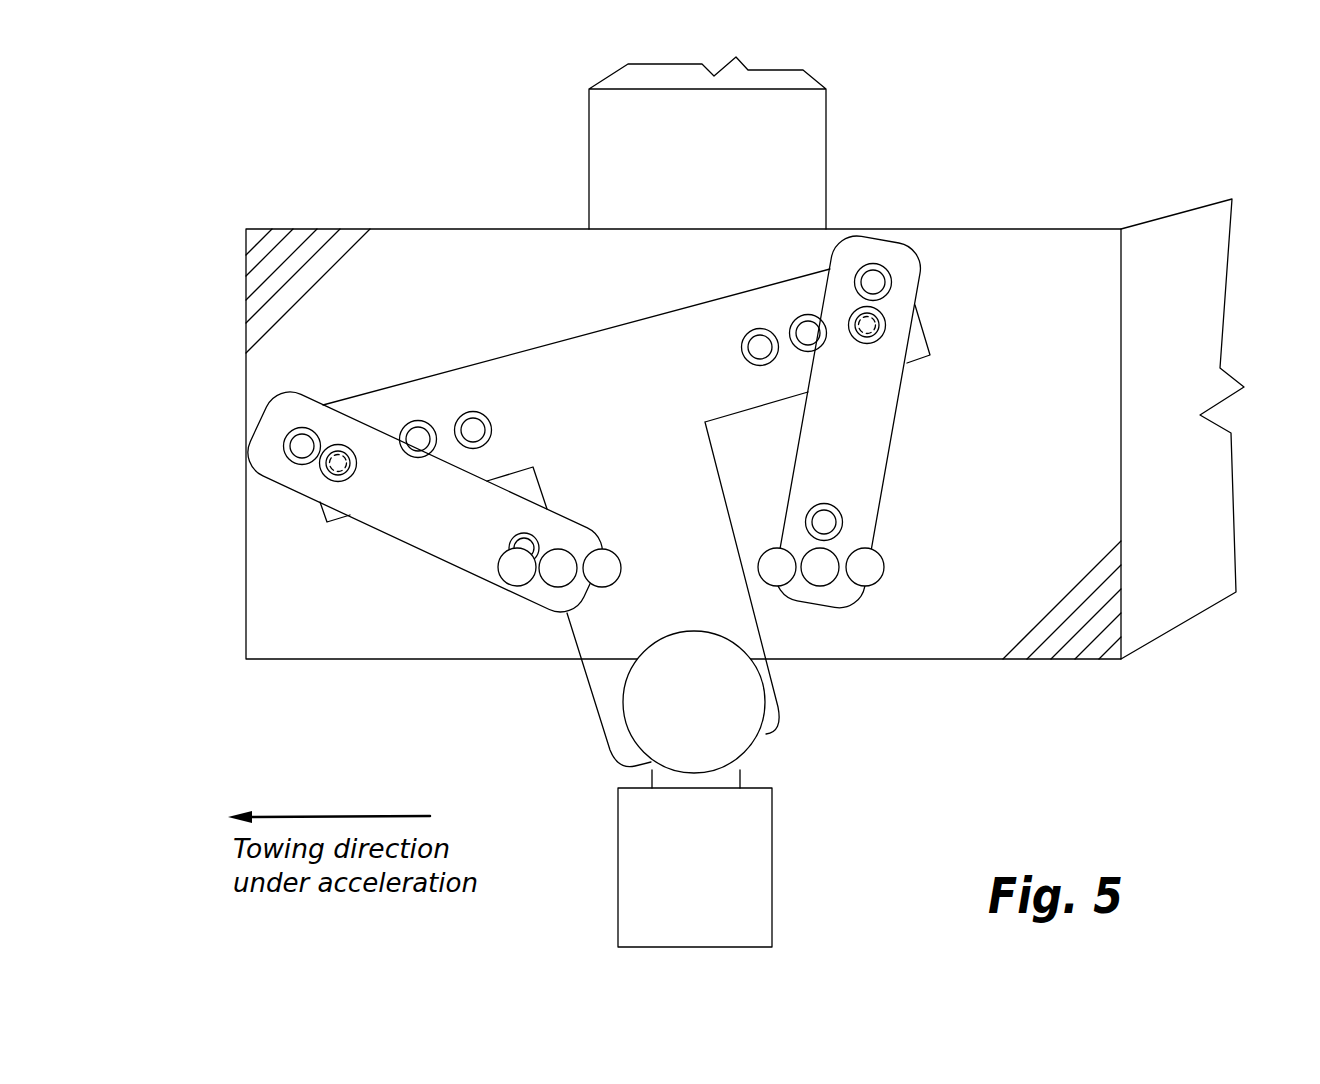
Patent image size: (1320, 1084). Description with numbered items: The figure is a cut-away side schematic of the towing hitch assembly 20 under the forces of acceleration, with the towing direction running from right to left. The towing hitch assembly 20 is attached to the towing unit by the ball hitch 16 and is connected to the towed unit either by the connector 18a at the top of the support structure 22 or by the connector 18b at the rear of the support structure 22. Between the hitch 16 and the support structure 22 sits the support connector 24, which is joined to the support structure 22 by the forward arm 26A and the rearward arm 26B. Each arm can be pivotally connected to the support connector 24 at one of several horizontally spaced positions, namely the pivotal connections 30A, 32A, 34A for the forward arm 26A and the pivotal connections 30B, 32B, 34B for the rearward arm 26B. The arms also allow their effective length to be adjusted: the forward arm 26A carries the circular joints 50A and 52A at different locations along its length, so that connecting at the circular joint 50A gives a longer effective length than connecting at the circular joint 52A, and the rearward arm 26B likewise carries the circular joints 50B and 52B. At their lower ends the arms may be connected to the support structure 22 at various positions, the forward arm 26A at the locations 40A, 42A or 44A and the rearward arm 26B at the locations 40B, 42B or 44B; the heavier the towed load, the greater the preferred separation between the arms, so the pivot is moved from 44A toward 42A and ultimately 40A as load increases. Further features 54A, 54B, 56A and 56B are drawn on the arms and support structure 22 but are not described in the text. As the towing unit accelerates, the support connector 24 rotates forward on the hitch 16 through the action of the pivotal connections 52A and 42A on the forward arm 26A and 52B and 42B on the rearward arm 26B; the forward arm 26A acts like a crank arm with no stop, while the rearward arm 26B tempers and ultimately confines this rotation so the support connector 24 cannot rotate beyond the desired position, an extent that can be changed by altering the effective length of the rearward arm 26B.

The hitch 16 is at (710, 720).
The connector 18a is at (760, 130).
The connector 18b is at (1195, 260).
The towing hitch assembly 20 is at (352, 195).
The support structure 22 is at (246, 373).
The support connector 24 is at (593, 410).
The forward arm 26A is at (400, 490).
The rearward arm 26B is at (867, 428).
The pivotal connection 30A is at (338, 460).
The pivotal connection 30B is at (867, 327).
The pivotal connection 32A is at (418, 440).
The pivotal connection 32B is at (808, 333).
The pivotal connection 34A is at (473, 430).
The pivotal connection 34B is at (760, 347).
The pivotal connection 40A is at (512, 582).
The pivotal connection 40B is at (880, 578).
The pivotal connection 42A is at (556, 572).
The pivotal connection 42B is at (827, 576).
The pivotal connection 44A is at (604, 572).
The pivotal connection 44B is at (781, 580).
The circular joint 50A is at (287, 458).
The circular joint 50B is at (888, 283).
The circular joint 52A is at (330, 477).
The circular joint 52B is at (882, 333).
The first roller axle hole 54A is at (513, 540).
The second roller axle hole 54B is at (845, 523).
The first roller axle 56A is at (558, 549).
The second roller axle 56B is at (808, 549).